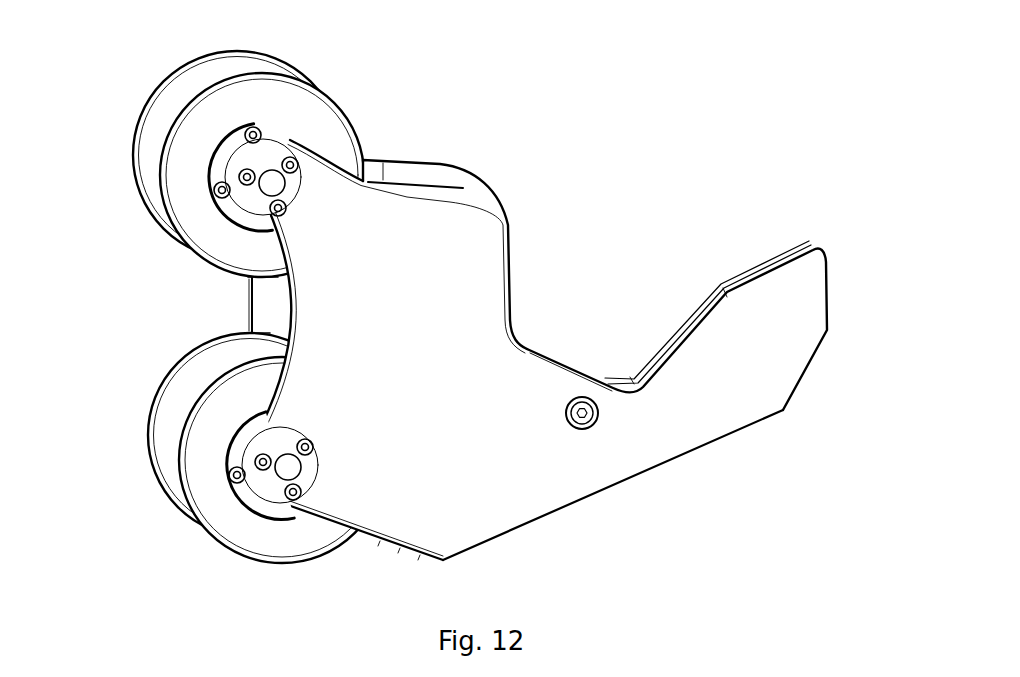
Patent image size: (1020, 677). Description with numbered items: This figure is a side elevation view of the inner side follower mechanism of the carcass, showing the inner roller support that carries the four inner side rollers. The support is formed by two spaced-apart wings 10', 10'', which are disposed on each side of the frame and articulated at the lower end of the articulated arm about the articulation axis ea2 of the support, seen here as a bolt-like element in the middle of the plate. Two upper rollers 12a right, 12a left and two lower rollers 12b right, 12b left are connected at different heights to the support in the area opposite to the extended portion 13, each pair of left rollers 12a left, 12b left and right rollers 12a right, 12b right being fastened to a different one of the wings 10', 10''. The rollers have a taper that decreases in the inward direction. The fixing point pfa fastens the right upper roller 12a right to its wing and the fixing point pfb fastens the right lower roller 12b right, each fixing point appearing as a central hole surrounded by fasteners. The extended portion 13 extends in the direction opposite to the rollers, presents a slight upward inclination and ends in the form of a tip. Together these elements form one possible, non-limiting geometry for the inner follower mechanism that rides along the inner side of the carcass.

The upper left inner side roller 12a left is at (161, 69).
The upper right inner side roller 12a right is at (349, 95).
The lower left inner side roller 12b left is at (142, 480).
The lower right inner side roller 12b right is at (245, 561).
The fixing point pfa is at (297, 174).
The fixing point pfb is at (295, 490).
The articulation axis ea2 is at (593, 386).
The extended portion 13 is at (833, 345).
The wing 10' is at (186, 300).
The wing 10'' is at (530, 347).